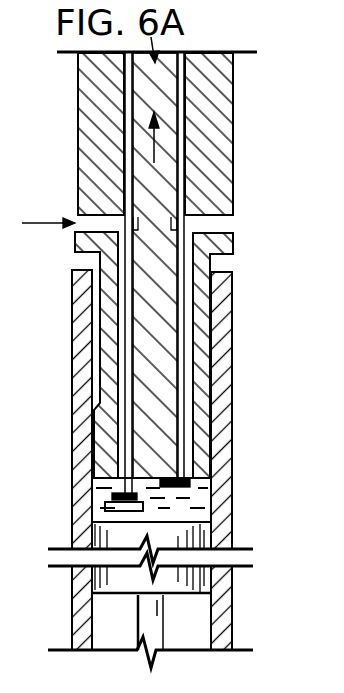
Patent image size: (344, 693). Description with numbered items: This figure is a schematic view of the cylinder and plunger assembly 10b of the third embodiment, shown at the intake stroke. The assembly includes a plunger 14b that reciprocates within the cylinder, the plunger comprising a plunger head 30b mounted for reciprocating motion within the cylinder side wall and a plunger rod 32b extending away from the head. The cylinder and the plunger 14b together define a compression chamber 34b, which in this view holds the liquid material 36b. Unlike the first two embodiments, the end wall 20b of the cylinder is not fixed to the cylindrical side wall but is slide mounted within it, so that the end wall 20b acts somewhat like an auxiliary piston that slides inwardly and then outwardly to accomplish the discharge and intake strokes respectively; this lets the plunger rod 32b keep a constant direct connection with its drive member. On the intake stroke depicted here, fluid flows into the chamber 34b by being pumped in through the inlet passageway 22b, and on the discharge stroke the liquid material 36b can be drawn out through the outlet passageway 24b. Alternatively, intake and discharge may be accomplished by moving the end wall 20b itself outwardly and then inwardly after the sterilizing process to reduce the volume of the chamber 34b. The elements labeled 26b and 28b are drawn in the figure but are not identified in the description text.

The cylinder and plunger assembly 10b is at (70, 352).
The plunger 14b is at (204, 531).
The end wall 20b is at (203, 203).
The inlet passageway 22b is at (82, 224).
The outlet passageway 24b is at (218, 228).
The electrode tip 26b is at (110, 502).
The counter electrode 28b is at (210, 492).
The plunger head 30b is at (213, 582).
The plunger rod 32b is at (150, 623).
The compression chamber 34b is at (208, 503).
The liquid material 36b is at (197, 511).